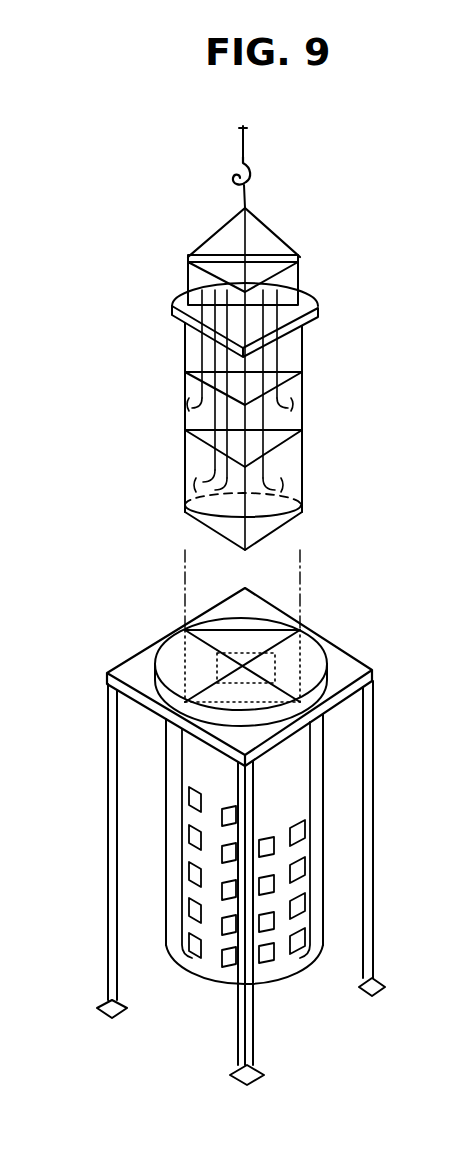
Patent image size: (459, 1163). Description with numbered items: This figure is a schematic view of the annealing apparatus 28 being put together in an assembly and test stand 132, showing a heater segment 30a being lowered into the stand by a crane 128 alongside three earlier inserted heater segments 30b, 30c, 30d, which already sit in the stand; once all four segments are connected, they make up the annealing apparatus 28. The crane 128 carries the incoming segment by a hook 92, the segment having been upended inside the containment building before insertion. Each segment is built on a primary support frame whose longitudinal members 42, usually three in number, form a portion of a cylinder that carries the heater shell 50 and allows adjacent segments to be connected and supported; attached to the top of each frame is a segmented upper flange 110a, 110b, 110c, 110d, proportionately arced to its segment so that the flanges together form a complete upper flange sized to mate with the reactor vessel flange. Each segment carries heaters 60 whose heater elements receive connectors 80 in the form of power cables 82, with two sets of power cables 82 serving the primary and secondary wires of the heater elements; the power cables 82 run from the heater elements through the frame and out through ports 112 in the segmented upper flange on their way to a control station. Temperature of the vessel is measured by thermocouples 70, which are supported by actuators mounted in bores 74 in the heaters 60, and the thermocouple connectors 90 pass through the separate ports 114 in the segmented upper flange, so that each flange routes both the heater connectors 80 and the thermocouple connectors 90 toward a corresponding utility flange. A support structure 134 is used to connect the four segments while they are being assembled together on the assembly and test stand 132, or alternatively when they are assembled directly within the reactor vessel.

The crane 128 is at (247, 136).
The connectors 90 is at (190, 284).
The segmented upper flange 110a is at (308, 302).
The connectors 80 is at (316, 308).
The heater segment 30a is at (165, 333).
The heater shell 50 is at (292, 348).
The thermocouples 70 is at (185, 422).
The bores 74 is at (193, 403).
The hook 92 is at (290, 422).
The power cables 82 is at (268, 466).
The longitudinal members 42 is at (185, 517).
The support structure 134 is at (205, 612).
The assembly and test stand 132 is at (348, 668).
The segmented upper flange 110d is at (172, 657).
The segmented upper flange 110b is at (330, 641).
The segmented upper flange 110c is at (170, 722).
The ports 112 is at (317, 655).
The ports 114 is at (178, 672).
The heater segment 30d is at (168, 765).
The heater segment 30b is at (318, 760).
The heater segment 30c is at (283, 962).
The annealing apparatus 28 is at (155, 858).
The heaters 60 is at (263, 838).